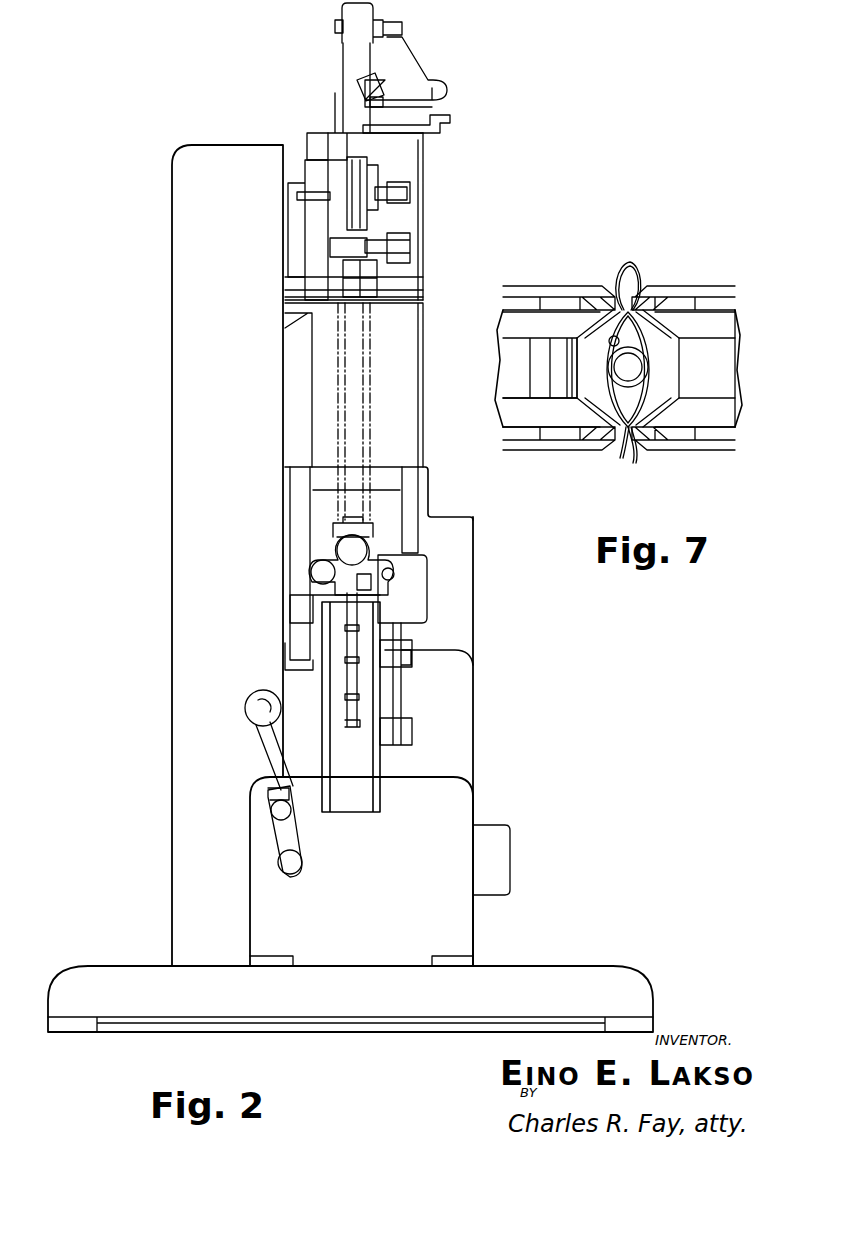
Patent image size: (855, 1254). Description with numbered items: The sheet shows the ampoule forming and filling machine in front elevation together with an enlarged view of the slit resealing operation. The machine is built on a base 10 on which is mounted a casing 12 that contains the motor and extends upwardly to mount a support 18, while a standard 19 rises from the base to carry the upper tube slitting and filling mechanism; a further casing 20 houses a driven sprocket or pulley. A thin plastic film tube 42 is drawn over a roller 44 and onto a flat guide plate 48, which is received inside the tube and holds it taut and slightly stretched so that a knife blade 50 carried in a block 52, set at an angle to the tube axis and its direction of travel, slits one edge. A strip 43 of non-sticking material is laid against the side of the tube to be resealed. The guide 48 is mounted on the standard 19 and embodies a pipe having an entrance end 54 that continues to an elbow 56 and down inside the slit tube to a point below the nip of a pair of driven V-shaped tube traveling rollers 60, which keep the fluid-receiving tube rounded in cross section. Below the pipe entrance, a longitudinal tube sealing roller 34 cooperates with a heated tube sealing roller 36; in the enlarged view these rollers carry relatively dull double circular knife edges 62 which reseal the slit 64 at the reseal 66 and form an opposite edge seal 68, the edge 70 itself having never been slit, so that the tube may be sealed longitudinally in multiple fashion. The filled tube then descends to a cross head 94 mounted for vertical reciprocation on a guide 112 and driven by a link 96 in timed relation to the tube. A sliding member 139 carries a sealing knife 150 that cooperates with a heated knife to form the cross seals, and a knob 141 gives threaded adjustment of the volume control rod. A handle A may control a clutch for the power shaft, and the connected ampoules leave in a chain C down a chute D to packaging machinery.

In FIG. 2, the base 10 is at (640, 994).
In FIG. 2, the casing 12 is at (463, 920).
In FIG. 2, the support 18 is at (467, 718).
In FIG. 2, the standard 19 is at (413, 334).
In FIG. 2, the casing 20 is at (180, 456).
In FIG. 2, the longitudinal tube sealing roller 34 is at (367, 176).
In FIG. 7, the longitudinal tube sealing roller 34 is at (727, 392).
In FIG. 7, the heated tube sealing roller 36 is at (503, 349).
In FIG. 7, the tube 42 is at (607, 352).
In FIG. 7, the strip of non-sticking material 43 is at (597, 373).
In FIG. 2, the roller 44 is at (347, 23).
In FIG. 2, the guide plate 48 is at (345, 72).
In FIG. 2, the knife blade 50 is at (383, 78).
In FIG. 2, the block 52 is at (430, 90).
In FIG. 2, the entrance end 54 is at (442, 122).
In FIG. 7, the elbow 56 is at (648, 358).
In FIG. 2, the tube traveling rollers 60 is at (413, 278).
In FIG. 7, the double circular knife edges 62 is at (528, 303).
In FIG. 7, the slit 64 is at (633, 452).
In FIG. 7, the reseal 66 is at (610, 444).
In FIG. 7, the opposite edge seal 68 is at (640, 276).
In FIG. 7, the edge 70 is at (632, 264).
In FIG. 2, the cross head 94 is at (418, 599).
In FIG. 2, the link 96 is at (403, 682).
In FIG. 2, the guide 112 is at (413, 468).
In FIG. 2, the sliding member 139 is at (360, 548).
In FIG. 2, the knob 141 is at (318, 573).
In FIG. 2, the sealing knife 150 is at (360, 520).
In FIG. 2, the handle A is at (267, 748).
In FIG. 2, the chain C is at (347, 679).
In FIG. 2, the chute D is at (347, 803).